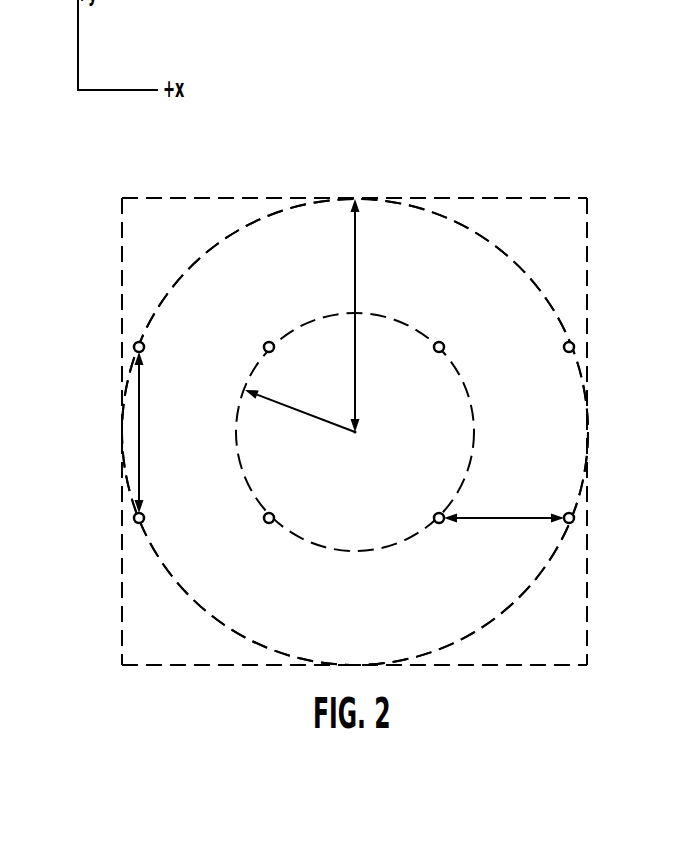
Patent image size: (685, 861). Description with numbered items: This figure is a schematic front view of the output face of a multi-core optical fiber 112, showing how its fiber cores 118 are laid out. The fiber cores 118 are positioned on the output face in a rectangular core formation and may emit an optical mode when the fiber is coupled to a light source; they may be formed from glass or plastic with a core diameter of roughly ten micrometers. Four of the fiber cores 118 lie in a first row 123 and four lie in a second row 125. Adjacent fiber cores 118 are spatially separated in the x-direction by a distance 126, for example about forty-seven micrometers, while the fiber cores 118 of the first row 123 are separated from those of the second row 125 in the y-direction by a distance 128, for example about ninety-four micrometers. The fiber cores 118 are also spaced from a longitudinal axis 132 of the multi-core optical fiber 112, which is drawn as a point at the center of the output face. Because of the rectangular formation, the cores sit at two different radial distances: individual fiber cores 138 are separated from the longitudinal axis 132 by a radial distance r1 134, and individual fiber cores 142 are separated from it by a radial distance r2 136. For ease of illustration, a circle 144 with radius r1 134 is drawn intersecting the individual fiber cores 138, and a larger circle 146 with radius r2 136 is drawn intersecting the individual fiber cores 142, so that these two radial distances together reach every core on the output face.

The multi-core optical fiber 112 is at (490, 165).
The fiber cores 118 is at (182, 290).
The first row 123 is at (108, 340).
The second row 125 is at (108, 508).
The distance 126 is at (503, 516).
The distance 128 is at (140, 435).
The longitudinal axis 132 is at (358, 420).
The radial distance r1 134 is at (309, 415).
The radial distance r2 136 is at (357, 362).
The individual fiber cores 138 is at (266, 341).
The individual fiber cores 142 is at (146, 347).
The circle 144 is at (474, 420).
The circle 146 is at (548, 565).